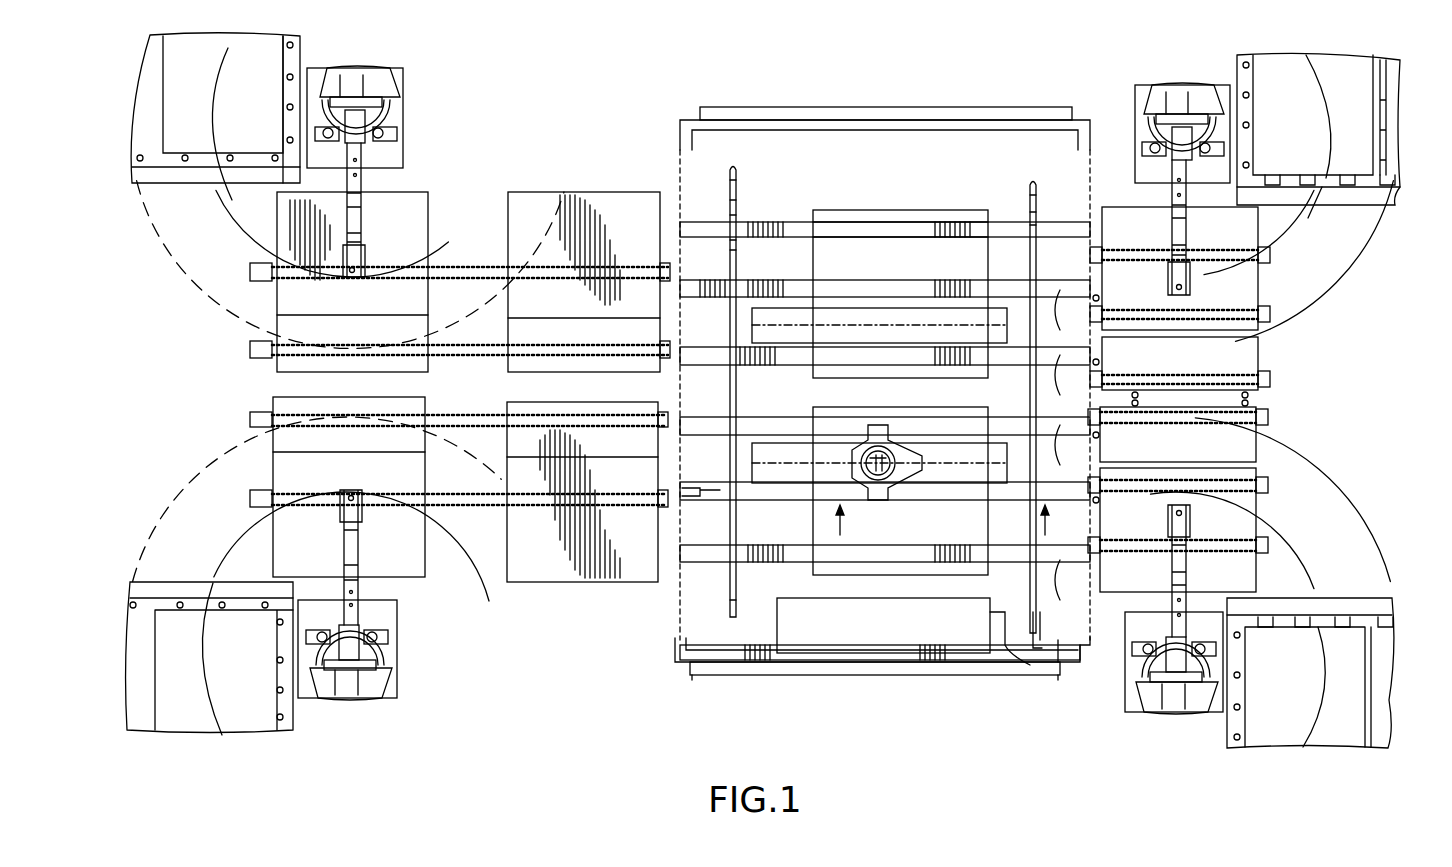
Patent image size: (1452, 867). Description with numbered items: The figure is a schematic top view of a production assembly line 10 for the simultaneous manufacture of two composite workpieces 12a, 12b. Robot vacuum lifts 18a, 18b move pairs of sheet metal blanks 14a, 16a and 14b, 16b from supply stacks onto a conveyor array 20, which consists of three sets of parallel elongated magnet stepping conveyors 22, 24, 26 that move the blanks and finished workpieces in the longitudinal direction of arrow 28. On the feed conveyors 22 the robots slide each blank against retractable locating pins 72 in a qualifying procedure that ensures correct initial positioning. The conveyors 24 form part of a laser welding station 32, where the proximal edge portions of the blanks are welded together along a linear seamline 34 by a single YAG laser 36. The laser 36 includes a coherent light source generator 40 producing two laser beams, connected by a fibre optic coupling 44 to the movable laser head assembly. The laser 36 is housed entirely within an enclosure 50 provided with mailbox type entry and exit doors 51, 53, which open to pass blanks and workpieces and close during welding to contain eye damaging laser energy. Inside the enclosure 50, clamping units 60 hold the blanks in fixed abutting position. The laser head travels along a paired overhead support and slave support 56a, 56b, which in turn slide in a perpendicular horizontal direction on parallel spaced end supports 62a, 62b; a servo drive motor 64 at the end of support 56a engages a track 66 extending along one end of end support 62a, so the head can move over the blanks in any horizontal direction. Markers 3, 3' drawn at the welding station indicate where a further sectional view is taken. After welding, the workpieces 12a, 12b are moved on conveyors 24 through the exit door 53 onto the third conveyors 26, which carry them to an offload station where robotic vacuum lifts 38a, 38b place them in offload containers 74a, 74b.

The production assembly line 10 is at (830, 66).
The composite workpiece 12a is at (264, 103).
The composite workpiece 12b is at (825, 412).
The sheet metal blank 14a is at (895, 276).
The sheet metal blank 14b is at (935, 549).
The sheet metal blank 16a is at (815, 378).
The sheet metal blank 16b is at (1245, 438).
The robot vacuum lift 18a is at (1165, 92).
The robot vacuum lift 18b is at (1150, 706).
The conveyor array 20 is at (238, 349).
The magnet stepping conveyors 22 is at (1148, 315).
The conveyors 24 is at (1058, 458).
The conveyors 26 is at (475, 267).
The arrow 28 is at (1355, 423).
The laser welding station 32 is at (800, 676).
The linear seamline 34 is at (520, 318).
The YAG laser 36 is at (878, 447).
The robotic vacuum lift 38a is at (385, 98).
The robotic vacuum lift 38b is at (370, 700).
The coherent light source generator 40 is at (900, 644).
The fibre optic coupling 44 is at (1010, 640).
The enclosure 50 is at (996, 118).
The entry door 51 is at (1090, 652).
The exit door 53 is at (672, 650).
The overhead support 56a is at (778, 512).
The slave support 56b is at (1000, 428).
The clamping units 60 is at (748, 312).
The end support 62a is at (745, 180).
The end support 62b is at (1030, 192).
The servo drive motor 64 is at (697, 535).
The track 66 is at (740, 273).
The retractable locating pins 72 is at (1250, 404).
The offload container 74a is at (305, 44).
The offload container 74b is at (293, 720).
The section line 3 is at (839, 528).
The section line 3' is at (1047, 528).